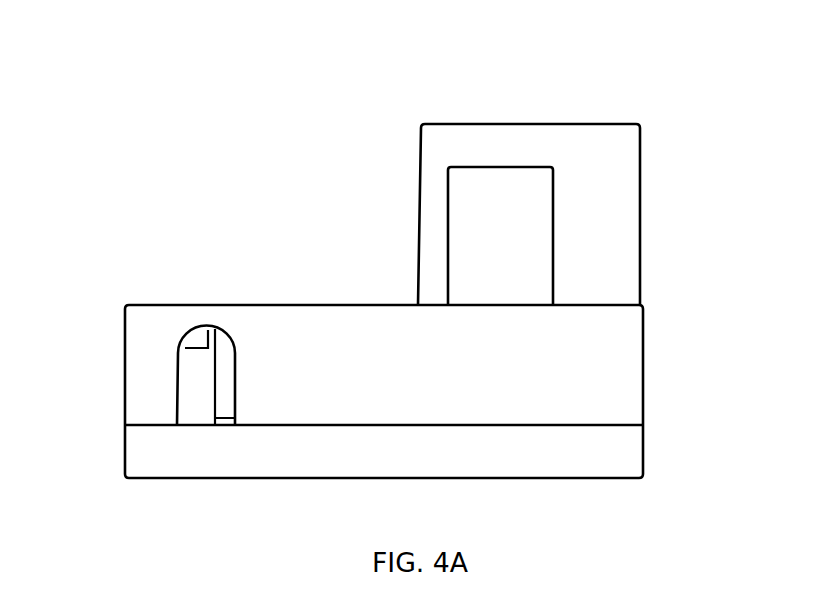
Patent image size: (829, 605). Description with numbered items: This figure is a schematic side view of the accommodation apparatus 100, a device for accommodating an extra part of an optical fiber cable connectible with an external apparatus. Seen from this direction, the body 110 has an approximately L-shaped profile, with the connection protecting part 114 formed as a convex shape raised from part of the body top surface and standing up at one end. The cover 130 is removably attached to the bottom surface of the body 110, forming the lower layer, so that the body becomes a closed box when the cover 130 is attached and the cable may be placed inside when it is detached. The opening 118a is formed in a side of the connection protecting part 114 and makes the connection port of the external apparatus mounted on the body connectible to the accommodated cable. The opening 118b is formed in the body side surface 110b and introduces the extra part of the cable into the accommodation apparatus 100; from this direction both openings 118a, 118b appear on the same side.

The accommodation apparatus 100 is at (437, 36).
The body 110 is at (317, 217).
The body side surface 110b is at (545, 361).
The cover 130 is at (543, 467).
The connection protecting part 114 is at (605, 177).
The opening 118a is at (528, 262).
The opening 118b is at (198, 400).